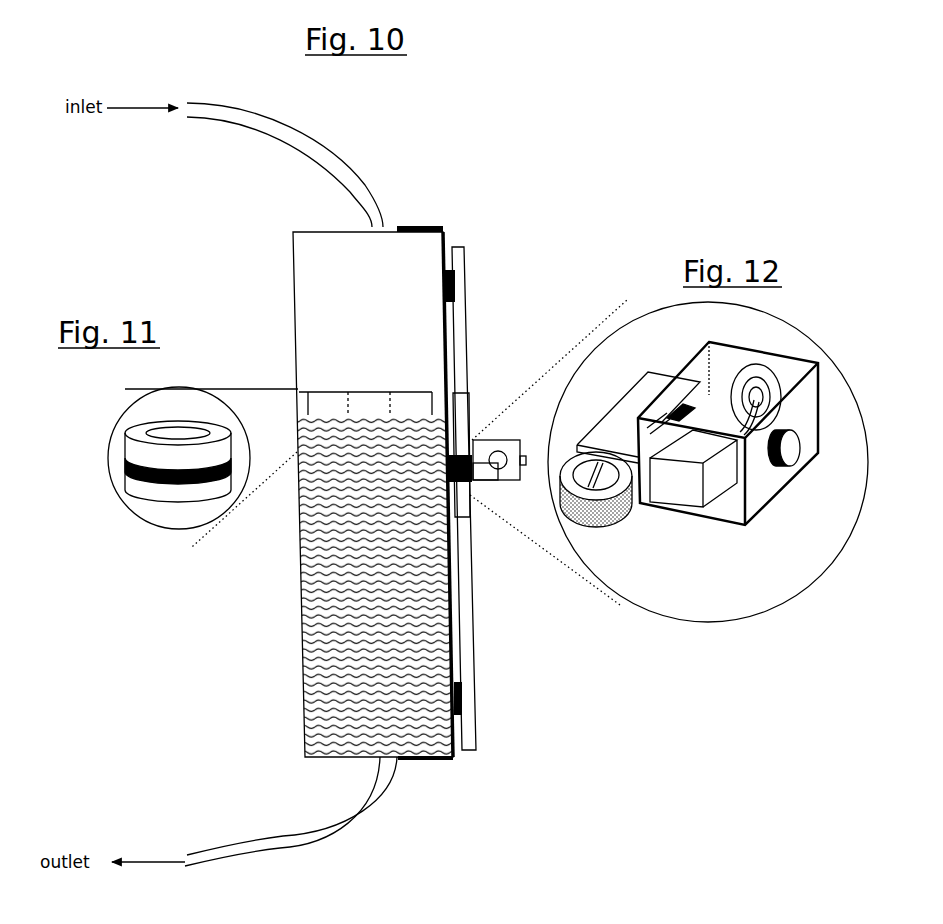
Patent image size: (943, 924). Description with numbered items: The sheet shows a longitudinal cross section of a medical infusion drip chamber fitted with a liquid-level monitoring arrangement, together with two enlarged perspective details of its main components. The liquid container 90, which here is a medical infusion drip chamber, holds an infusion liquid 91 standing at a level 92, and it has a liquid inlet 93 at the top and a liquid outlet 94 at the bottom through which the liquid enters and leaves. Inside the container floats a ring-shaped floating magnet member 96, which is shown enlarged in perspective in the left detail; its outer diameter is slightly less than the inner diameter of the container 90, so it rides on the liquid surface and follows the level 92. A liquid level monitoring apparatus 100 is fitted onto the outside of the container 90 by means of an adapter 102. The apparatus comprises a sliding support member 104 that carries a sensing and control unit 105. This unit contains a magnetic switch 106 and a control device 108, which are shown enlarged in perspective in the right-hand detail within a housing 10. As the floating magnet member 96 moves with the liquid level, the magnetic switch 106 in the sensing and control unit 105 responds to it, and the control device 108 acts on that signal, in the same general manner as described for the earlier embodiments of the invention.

In FIG. 12, the housing 10 is at (813, 342).
In FIG. 10, the liquid container 90 is at (292, 627).
In FIG. 10, the infusion liquid 91 is at (320, 538).
In FIG. 10, the level 92 is at (298, 393).
In FIG. 10, the liquid inlet 93 is at (360, 162).
In FIG. 10, the liquid outlet 94 is at (350, 833).
In FIG. 10, the ring-shaped floating magnet member 96 is at (375, 388).
In FIG. 11, the ring-shaped floating magnet member 96 is at (118, 456).
In FIG. 10, the liquid level monitoring apparatus 100 is at (500, 530).
In FIG. 10, the adapter 102 is at (427, 760).
In FIG. 10, the sliding support member 104 is at (475, 688).
In FIG. 10, the sensing and control unit 105 is at (503, 427).
In FIG. 12, the magnetic switch 106 is at (632, 410).
In FIG. 12, the control device 108 is at (675, 487).